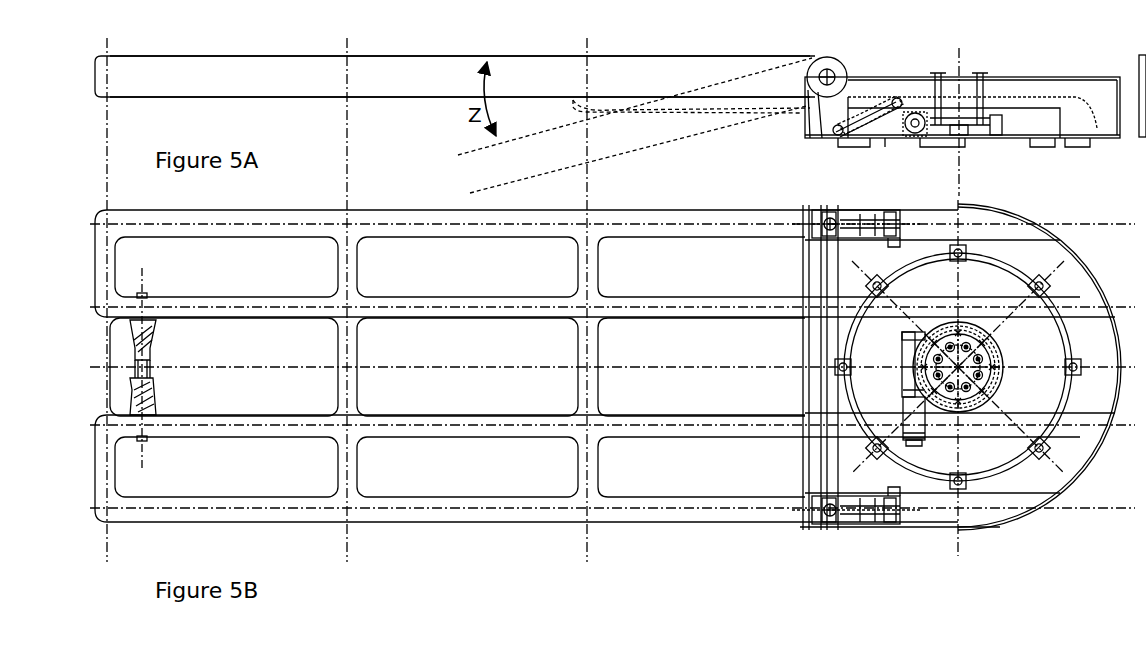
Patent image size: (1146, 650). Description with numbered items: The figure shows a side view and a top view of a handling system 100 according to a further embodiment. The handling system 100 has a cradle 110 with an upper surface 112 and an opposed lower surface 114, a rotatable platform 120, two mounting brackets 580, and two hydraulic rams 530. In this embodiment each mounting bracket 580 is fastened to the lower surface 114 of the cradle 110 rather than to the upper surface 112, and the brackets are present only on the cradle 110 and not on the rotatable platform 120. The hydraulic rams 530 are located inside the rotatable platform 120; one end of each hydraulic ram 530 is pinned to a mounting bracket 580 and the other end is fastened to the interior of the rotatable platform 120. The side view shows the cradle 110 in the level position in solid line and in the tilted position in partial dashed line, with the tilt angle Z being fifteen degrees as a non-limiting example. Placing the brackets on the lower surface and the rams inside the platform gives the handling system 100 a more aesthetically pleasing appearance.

In FIG. 5B, the handling system 100 is at (615, 408).
In FIG. 5A, the cradle 110 is at (407, 103).
In FIG. 5B, the cradle 110 is at (413, 200).
In FIG. 5A, the upper surface 112 is at (270, 55).
In FIG. 5A, the lower surface 114 is at (270, 98).
In FIG. 5A, the rotatable platform 120 is at (1065, 68).
In FIG. 5B, the rotatable platform 120 is at (1083, 256).
In FIG. 5A, the hydraulic ram 530 is at (850, 125).
In FIG. 5B, the hydraulic ram 530 is at (878, 186).
In FIG. 5A, the mounting bracket 580 is at (797, 110).